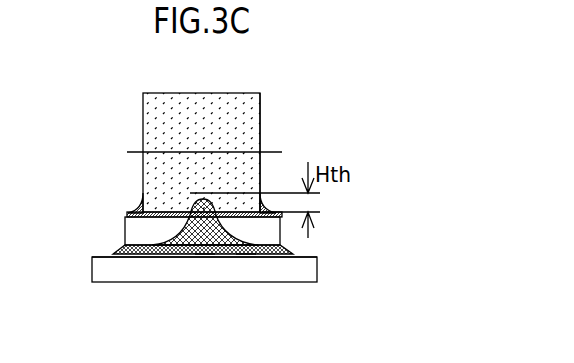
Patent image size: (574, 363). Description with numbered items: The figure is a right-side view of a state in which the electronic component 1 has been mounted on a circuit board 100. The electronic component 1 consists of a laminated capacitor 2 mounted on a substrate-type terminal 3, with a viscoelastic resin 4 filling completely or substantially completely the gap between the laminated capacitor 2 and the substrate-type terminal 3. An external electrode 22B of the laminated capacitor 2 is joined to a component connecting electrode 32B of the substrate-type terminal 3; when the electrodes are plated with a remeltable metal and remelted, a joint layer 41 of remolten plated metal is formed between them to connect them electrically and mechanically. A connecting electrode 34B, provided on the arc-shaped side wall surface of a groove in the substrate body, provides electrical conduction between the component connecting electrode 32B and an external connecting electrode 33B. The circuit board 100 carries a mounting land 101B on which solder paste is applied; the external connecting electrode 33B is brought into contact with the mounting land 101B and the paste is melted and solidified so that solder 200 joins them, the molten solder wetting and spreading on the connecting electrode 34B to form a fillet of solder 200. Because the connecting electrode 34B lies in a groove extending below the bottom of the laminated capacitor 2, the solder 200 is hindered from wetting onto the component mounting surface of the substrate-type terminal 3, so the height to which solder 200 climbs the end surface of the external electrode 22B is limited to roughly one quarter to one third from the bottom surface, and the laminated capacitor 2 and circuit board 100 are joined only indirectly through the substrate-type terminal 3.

The electronic component 1 is at (362, 108).
The laminated capacitor 2 is at (132, 87).
The external electrode 22B is at (254, 94).
The viscoelastic resin 4 is at (146, 211).
The joint layer 41 is at (139, 211).
The substrate-type terminal 3 is at (110, 232).
The component connecting electrode 32B is at (127, 215).
The mounting land 101B is at (126, 255).
The circuit board 100 is at (148, 297).
The solder 200 is at (195, 262).
The connecting electrode 34B is at (205, 256).
The external connecting electrode 33B is at (246, 256).